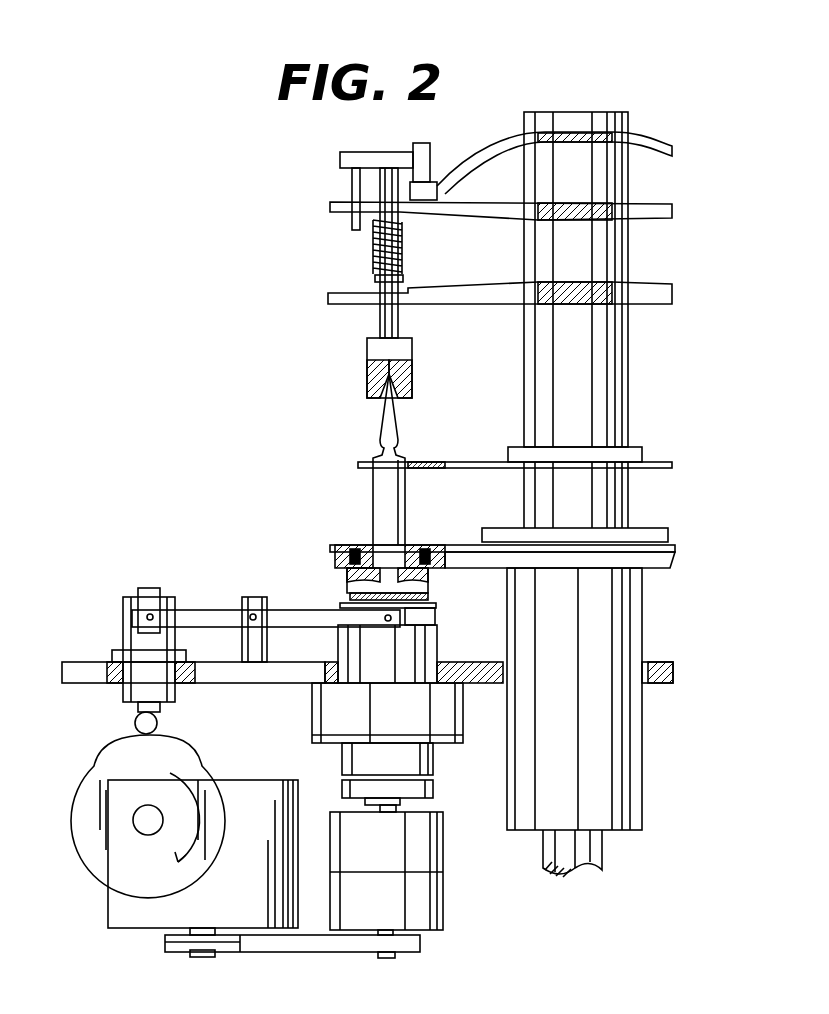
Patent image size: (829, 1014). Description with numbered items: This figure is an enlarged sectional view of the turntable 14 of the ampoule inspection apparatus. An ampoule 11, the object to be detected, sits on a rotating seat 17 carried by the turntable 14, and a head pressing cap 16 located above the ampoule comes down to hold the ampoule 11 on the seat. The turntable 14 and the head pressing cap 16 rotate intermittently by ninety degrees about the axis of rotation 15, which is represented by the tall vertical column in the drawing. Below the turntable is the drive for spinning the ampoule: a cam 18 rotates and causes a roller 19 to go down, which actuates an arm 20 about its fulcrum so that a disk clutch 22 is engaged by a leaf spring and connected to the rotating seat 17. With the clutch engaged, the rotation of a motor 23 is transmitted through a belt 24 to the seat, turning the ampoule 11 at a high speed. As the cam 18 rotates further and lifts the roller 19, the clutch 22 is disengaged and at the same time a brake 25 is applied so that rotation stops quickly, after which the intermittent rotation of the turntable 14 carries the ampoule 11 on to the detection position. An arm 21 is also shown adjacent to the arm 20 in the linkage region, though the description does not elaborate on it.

The ampoule 11 is at (375, 488).
The turntable 14 is at (340, 548).
The axis of rotation 15 is at (593, 863).
The head pressing cap 16 is at (366, 380).
The rotating seat 17 is at (410, 545).
The cam 18 is at (88, 793).
The roller 19 is at (135, 723).
The arm 20 is at (205, 612).
The arm 21 is at (253, 612).
The disk clutch 22 is at (437, 598).
The motor 23 is at (253, 785).
The belt 24 is at (305, 950).
The brake 25 is at (443, 905).